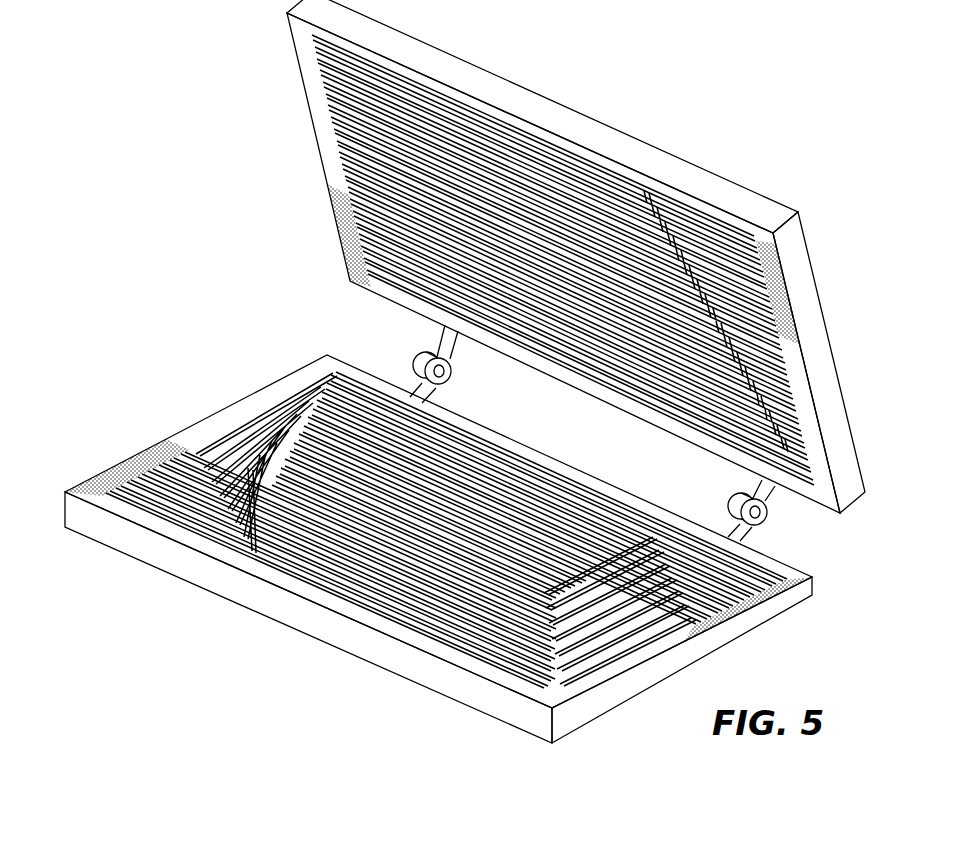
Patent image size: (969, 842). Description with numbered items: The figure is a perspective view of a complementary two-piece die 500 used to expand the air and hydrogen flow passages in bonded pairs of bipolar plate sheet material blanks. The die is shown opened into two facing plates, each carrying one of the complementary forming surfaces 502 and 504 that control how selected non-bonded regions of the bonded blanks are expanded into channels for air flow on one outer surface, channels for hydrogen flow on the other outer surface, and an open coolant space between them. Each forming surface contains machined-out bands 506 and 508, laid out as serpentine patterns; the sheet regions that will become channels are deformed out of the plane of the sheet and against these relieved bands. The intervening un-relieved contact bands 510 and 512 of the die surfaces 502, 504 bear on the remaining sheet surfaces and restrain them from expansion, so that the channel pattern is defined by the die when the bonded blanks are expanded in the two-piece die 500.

The two-piece die 500 is at (692, 134).
The forming surface 502 is at (330, 137).
The forming surface 504 is at (212, 428).
The machined-out band 506 is at (775, 350).
The machined-out band 508 is at (750, 580).
The un-relieved contact band 510 is at (345, 230).
The un-relieved contact band 512 is at (138, 462).